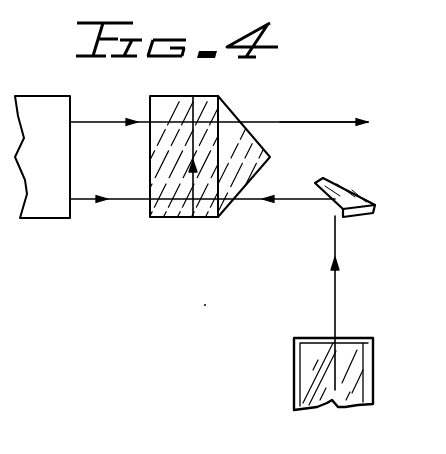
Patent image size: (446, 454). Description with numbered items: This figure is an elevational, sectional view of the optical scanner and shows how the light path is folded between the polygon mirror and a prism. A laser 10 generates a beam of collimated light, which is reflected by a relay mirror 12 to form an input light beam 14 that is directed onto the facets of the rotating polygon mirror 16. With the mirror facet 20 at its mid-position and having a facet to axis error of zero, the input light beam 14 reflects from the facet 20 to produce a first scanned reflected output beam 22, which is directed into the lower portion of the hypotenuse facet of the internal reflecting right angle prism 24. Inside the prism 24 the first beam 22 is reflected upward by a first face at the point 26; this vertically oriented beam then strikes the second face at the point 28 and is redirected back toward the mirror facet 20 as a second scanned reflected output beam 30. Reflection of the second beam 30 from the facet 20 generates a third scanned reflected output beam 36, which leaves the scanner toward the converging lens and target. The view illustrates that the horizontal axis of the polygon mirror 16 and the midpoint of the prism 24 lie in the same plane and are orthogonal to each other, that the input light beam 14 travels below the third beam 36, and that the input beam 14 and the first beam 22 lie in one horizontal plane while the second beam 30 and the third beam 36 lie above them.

The laser 10 is at (294, 357).
The relay mirror 12 is at (352, 190).
The input light beam 14 is at (271, 203).
The rotating polygon mirror 16 is at (37, 100).
The mirror facet 20 is at (72, 105).
The first scanned reflected output beam 22 is at (98, 203).
The internal reflecting right angle prism 24 is at (170, 220).
The reflection point on first prism face 26 is at (204, 219).
The reflection point on second prism face 28 is at (193, 96).
The second scanned reflected output beam 30 is at (132, 125).
The third scanned reflected output beam 36 is at (300, 121).